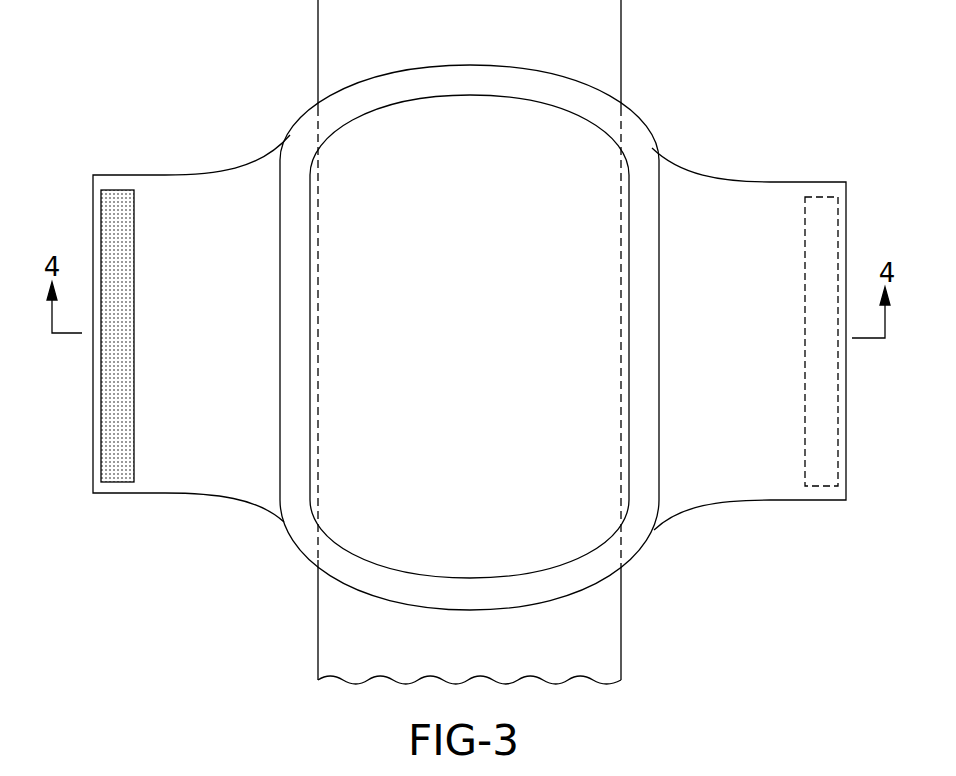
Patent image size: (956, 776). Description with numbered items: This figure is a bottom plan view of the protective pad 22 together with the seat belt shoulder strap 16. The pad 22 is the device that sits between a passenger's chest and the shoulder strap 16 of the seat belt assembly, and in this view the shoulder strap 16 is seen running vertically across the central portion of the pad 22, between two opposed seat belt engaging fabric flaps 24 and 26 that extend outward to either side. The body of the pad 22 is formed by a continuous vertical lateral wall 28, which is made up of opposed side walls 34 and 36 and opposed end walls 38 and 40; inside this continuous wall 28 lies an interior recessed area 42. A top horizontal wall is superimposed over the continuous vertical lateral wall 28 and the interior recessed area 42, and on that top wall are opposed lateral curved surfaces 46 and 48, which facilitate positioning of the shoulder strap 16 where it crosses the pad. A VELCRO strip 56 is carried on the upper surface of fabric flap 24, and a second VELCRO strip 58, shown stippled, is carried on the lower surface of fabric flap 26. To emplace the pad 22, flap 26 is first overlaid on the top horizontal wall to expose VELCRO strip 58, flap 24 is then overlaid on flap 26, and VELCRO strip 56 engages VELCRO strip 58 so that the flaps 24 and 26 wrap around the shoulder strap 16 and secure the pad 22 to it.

The shoulder strap 16 is at (317, 620).
The protective pad 22 is at (258, 106).
The seat belt engaging fabric flap 24 is at (770, 502).
The seat belt engaging fabric flap 26 is at (203, 500).
The continuous vertical lateral wall 28 is at (392, 132).
The side wall 34 is at (283, 270).
The side wall 36 is at (656, 252).
The end wall 38 is at (533, 103).
The end wall 40 is at (470, 578).
The interior recessed area 42 is at (392, 550).
The lateral curved surface 46 is at (508, 608).
The lateral curved surface 48 is at (485, 65).
The VELCRO strip 56 is at (812, 338).
The VELCRO strip 58 is at (123, 329).